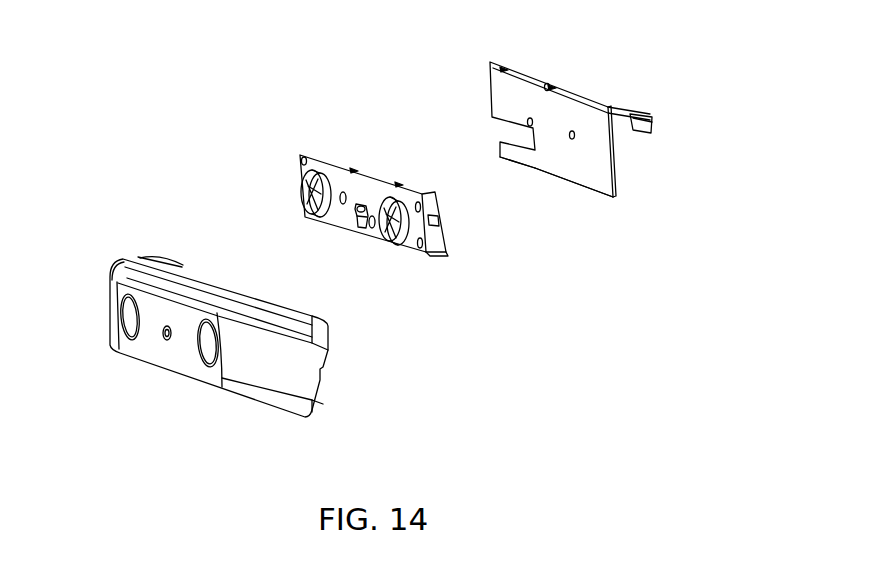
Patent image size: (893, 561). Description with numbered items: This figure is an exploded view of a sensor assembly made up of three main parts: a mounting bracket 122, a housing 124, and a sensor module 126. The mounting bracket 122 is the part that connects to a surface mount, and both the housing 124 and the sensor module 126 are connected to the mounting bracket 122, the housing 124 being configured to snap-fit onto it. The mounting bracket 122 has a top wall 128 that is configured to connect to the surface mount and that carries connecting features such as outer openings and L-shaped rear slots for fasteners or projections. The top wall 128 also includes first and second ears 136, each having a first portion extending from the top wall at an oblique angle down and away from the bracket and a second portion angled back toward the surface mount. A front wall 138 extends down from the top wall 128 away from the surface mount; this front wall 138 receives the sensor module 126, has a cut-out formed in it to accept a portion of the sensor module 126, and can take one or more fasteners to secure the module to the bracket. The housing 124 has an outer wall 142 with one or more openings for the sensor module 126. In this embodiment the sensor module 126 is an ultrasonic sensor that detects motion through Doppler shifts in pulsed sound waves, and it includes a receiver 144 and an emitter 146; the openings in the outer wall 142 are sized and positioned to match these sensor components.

The mounting bracket 122 is at (489, 68).
The housing 124 is at (117, 268).
The sensor module 126 is at (297, 165).
The top wall 128 is at (580, 87).
The ears 136 is at (657, 123).
The front wall 138 is at (585, 160).
The outer wall 142 is at (183, 364).
The receiver 144 is at (305, 203).
The emitter 146 is at (407, 252).